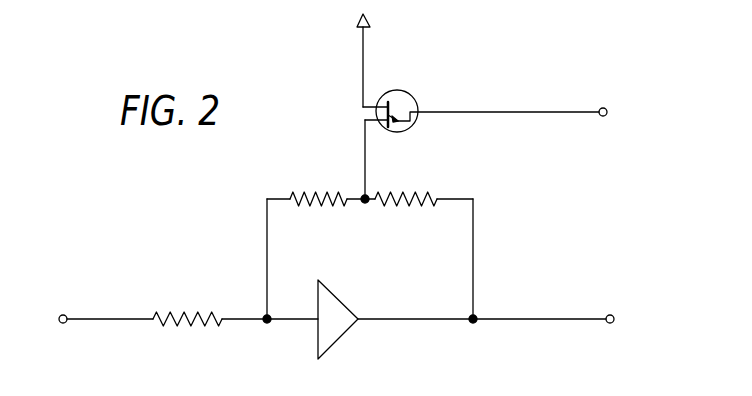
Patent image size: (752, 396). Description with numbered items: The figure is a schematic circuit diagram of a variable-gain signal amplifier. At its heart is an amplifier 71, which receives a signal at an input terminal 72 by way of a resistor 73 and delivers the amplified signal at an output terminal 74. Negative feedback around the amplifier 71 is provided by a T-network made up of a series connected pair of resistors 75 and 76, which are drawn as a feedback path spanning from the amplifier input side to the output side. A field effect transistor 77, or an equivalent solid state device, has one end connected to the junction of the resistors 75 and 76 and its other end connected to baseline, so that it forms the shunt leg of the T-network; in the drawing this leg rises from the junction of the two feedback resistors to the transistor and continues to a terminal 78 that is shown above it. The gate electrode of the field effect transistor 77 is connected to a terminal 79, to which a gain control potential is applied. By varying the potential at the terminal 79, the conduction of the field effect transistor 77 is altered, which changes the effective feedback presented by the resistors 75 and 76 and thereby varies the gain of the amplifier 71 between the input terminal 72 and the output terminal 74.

The amplifier 71 is at (343, 302).
The input terminal 72 is at (63, 315).
The resistor 73 is at (196, 306).
The output terminal 74 is at (610, 315).
The resistor 75 is at (322, 194).
The resistor 76 is at (412, 185).
The field effect transistor 77 is at (412, 99).
The supply terminal 78 is at (370, 23).
The terminal 79 is at (607, 110).